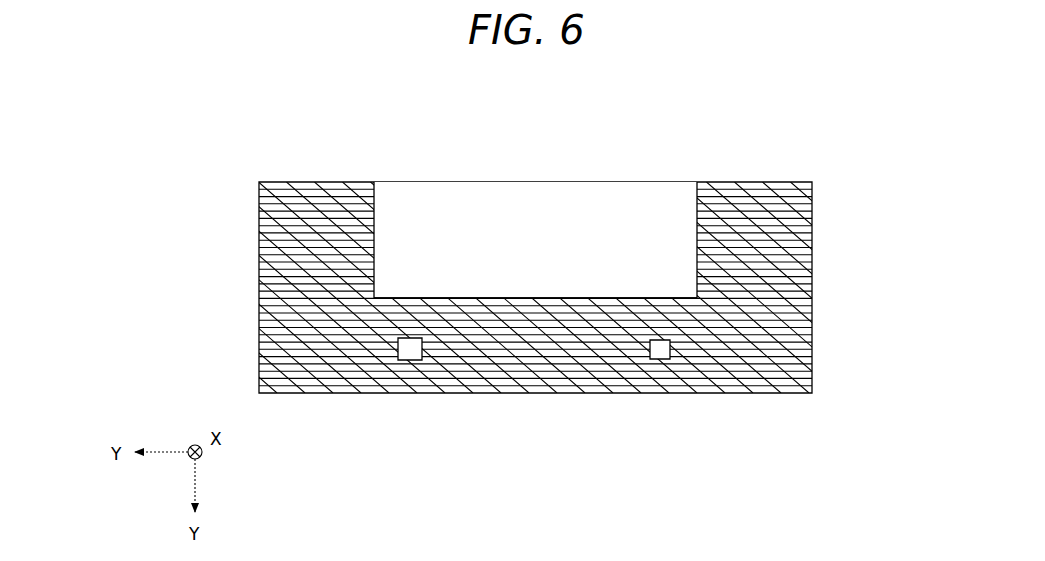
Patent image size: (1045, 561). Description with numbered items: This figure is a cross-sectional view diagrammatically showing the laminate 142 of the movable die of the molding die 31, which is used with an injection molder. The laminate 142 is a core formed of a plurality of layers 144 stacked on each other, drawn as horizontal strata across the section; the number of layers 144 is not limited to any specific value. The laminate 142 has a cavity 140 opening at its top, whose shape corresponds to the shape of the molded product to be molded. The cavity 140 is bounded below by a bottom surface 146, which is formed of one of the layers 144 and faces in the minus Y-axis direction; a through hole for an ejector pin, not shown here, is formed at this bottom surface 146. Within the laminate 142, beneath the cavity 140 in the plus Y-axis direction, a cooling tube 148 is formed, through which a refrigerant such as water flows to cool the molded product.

The molding die 31 is at (893, 106).
The cavity 140 is at (535, 172).
The laminate 142 is at (824, 155).
The layers 144 is at (459, 350).
The bottom surface 146 is at (641, 300).
The cooling tube 148 is at (660, 350).